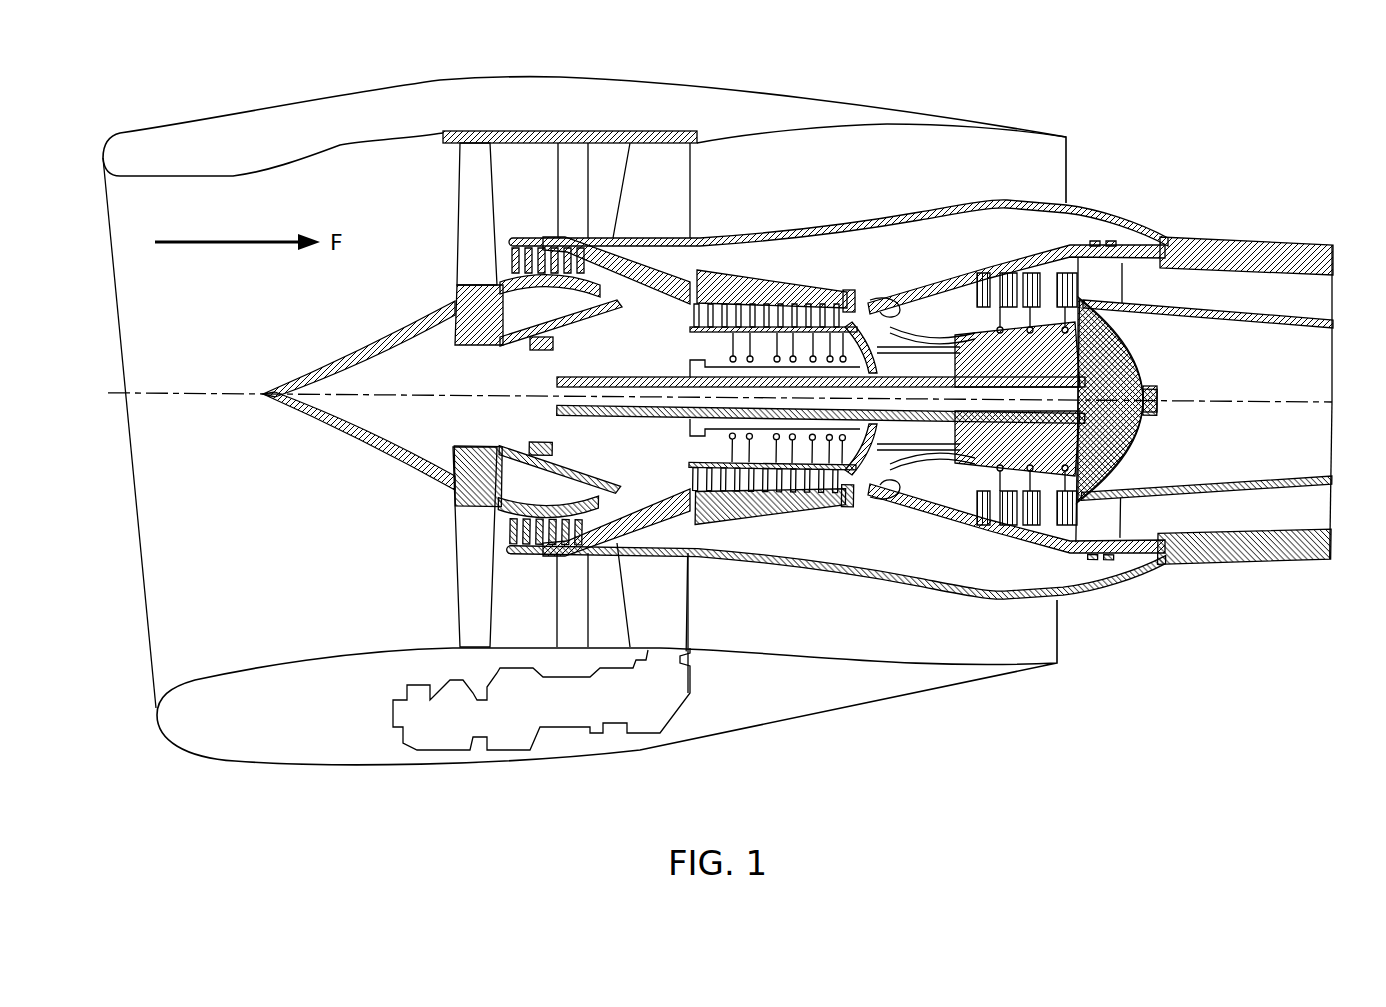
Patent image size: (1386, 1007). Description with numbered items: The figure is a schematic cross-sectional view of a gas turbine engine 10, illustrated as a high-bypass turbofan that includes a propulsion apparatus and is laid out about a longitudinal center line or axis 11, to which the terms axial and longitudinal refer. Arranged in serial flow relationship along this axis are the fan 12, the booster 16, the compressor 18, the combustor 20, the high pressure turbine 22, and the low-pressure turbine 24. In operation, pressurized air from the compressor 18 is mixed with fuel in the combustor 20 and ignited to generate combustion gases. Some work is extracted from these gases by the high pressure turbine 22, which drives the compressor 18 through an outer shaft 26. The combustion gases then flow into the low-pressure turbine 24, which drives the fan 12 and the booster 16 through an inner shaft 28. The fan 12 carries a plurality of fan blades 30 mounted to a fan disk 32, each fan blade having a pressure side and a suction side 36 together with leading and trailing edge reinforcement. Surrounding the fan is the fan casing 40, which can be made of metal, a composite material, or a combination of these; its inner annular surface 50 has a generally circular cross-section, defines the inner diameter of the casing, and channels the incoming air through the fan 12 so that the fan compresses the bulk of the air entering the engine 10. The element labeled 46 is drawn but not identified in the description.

The gas turbine engine 10 is at (1092, 168).
The longitudinal center line or axis 11 is at (170, 394).
The fan 12 is at (707, 238).
The booster 16 is at (530, 553).
The compressor 18 is at (767, 305).
The combustor 20 is at (918, 303).
The high pressure turbine 22 is at (958, 468).
The low-pressure turbine 24 is at (1010, 268).
The outer shaft 26 is at (907, 468).
The inner shaft 28 is at (605, 377).
The fan blades 30 is at (428, 243).
The fan disk 32 is at (453, 337).
The suction side 36 is at (707, 443).
The fan casing 40 is at (567, 131).
The fan frame strut 46 is at (720, 520).
The inner annular surface 50 is at (443, 131).